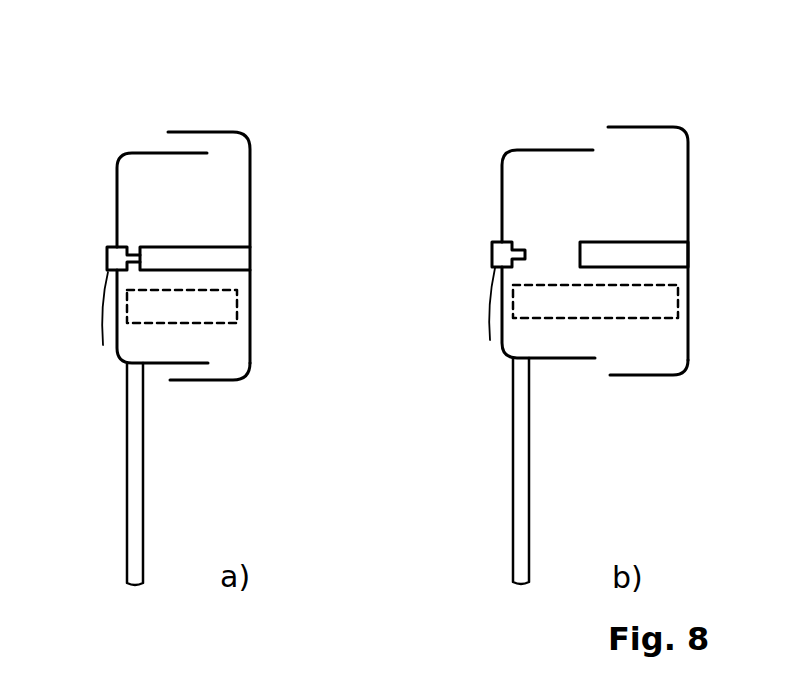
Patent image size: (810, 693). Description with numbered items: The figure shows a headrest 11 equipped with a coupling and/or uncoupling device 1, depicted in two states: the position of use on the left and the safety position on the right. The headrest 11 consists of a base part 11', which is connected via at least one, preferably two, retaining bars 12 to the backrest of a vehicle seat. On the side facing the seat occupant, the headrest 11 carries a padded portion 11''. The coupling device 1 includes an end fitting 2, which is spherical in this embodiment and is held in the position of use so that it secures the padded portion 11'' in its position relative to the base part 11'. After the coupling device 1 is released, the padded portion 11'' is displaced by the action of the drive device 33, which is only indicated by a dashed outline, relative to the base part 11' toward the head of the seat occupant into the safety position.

The headrest 11 is at (481, 200).
The base part 11' is at (315, 227).
The padded portion 11'' is at (485, 346).
The coupling and/or uncoupling device 1 is at (103, 254).
The end fitting 2 is at (138, 242).
The drive device 33 is at (220, 312).
The retaining bar 12 is at (137, 440).